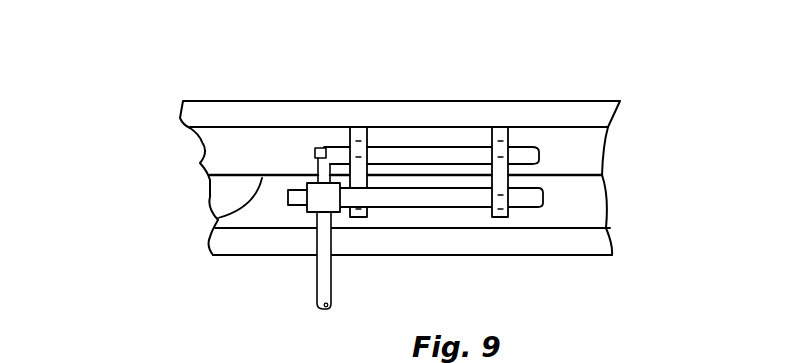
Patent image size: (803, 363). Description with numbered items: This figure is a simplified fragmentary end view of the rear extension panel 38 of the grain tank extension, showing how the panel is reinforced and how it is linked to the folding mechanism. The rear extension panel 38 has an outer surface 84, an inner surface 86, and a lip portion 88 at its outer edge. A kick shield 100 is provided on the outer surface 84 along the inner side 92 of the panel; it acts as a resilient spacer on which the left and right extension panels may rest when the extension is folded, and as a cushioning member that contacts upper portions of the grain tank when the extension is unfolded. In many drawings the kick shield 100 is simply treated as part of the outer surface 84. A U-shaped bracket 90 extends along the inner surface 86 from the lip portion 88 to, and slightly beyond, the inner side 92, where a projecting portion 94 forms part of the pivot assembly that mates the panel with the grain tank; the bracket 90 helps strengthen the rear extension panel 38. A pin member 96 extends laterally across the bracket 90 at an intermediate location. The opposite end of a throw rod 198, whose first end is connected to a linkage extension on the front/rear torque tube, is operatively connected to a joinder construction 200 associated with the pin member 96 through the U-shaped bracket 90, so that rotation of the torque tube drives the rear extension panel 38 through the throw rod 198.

The rear extension panel 38 is at (473, 100).
The kick shield 100 is at (262, 113).
The outer surface 84 is at (577, 127).
The inner side 92 is at (232, 148).
The lip portion 88 is at (218, 197).
The inner surface 86 is at (218, 214).
The projecting portion 94 is at (358, 133).
The pin member 96 is at (545, 193).
The U-shaped bracket 90 is at (510, 217).
The throw rod 198 is at (313, 292).
The joinder construction 200 is at (321, 197).